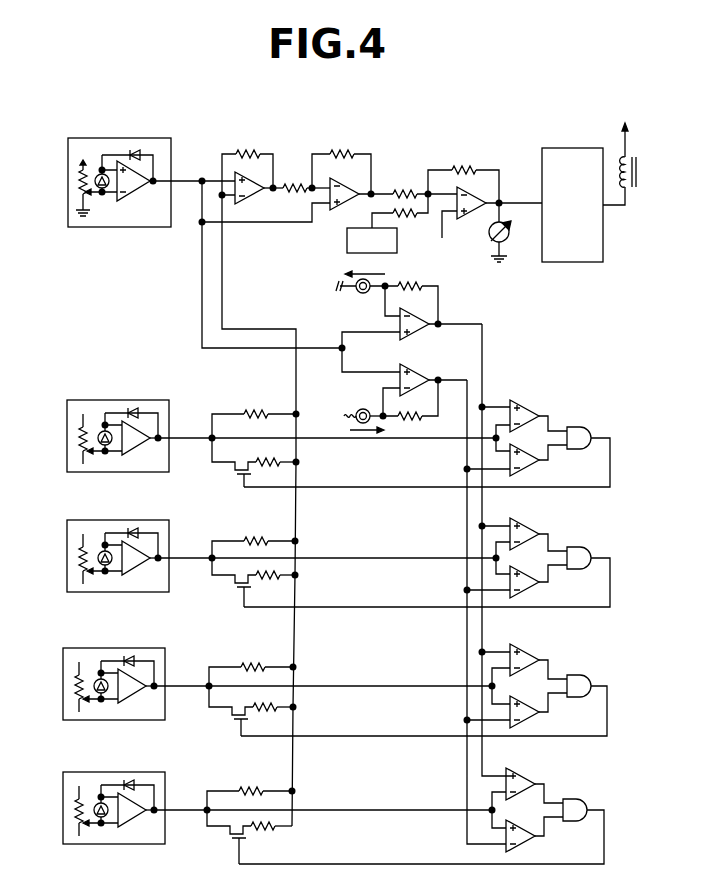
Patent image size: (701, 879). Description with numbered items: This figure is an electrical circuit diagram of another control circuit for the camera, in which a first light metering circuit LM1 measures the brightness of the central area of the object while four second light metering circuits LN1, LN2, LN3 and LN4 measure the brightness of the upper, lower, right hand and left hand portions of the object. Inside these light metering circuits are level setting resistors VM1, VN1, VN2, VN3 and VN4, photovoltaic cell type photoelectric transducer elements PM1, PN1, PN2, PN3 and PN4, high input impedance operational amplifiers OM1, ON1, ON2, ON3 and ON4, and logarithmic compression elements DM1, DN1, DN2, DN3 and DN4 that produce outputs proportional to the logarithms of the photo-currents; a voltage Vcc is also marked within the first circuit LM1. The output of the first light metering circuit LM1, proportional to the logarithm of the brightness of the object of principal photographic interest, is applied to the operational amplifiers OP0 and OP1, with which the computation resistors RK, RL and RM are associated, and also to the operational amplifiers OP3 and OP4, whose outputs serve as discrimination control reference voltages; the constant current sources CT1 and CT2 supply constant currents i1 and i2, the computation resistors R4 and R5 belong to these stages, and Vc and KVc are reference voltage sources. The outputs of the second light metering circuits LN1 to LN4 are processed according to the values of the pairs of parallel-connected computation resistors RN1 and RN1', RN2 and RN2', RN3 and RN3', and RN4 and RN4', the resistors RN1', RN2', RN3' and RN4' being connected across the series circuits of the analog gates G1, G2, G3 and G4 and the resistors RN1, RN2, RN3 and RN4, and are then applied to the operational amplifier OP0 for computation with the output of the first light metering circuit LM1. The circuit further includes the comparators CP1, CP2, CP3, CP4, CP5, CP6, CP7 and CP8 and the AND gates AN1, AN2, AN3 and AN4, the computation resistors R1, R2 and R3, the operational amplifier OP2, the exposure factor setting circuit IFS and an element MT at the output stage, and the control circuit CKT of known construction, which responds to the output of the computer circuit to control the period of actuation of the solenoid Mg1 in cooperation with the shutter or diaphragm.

The first light metering circuit LM1 is at (66, 172).
The supply voltage Vcc is at (85, 152).
The level setting resistor VM1 is at (80, 193).
The photoelectric transducer element PM1 is at (110, 190).
The logarithmic compression element DM1 is at (138, 150).
The high input impedance operational amplifier OM1 is at (132, 195).
The computation resistor RK is at (246, 152).
The operational amplifier OP0 is at (256, 192).
The computation resistor RL is at (295, 192).
The computation resistor RM is at (337, 152).
The operational amplifier OP1 is at (340, 204).
The computation resistor R1 is at (399, 189).
The computation resistor R2 is at (406, 218).
The exposure factor setting circuit IFS is at (372, 240).
The computation resistor R3 is at (456, 168).
The operational amplifier OP2 is at (476, 198).
The reference voltage source Vc is at (444, 236).
The meter MT is at (491, 243).
The control circuit CKT is at (572, 205).
The solenoid Mg1 is at (637, 172).
The constant current i1 is at (365, 266).
The constant current source CT1 is at (360, 301).
The computation resistor R4 is at (407, 283).
The operational amplifier OP3 is at (421, 331).
The operational amplifier OP4 is at (406, 372).
The computation resistor R5 is at (412, 424).
The constant current source CT2 is at (362, 408).
The reference voltage source KVc is at (331, 417).
The constant current i2 is at (373, 437).
The second light metering circuit LN1 is at (66, 424).
The level setting resistor VN1 is at (81, 450).
The photoelectric transducer element PN1 is at (112, 447).
The logarithmic compression element DN1 is at (134, 409).
The high input impedance operational amplifier ON1 is at (138, 449).
The computation resistor RN1' is at (254, 412).
The computation resistor RN1 is at (297, 470).
The analog gate G1 is at (241, 477).
The comparator CP1 is at (531, 403).
The comparator CP2 is at (533, 448).
The AND gate AN1 is at (582, 426).
The second light metering circuit LN2 is at (66, 544).
The level setting resistor VN2 is at (81, 570).
The photoelectric transducer element PN2 is at (112, 567).
The logarithmic compression element DN2 is at (134, 529).
The high input impedance operational amplifier ON2 is at (138, 569).
The computation resistor RN2' is at (253, 535).
The computation resistor RN2 is at (297, 583).
The analog gate G2 is at (241, 590).
The comparator CP3 is at (531, 521).
The comparator CP4 is at (533, 568).
The AND gate AN2 is at (582, 546).
The second light metering circuit LN3 is at (62, 672).
The level setting resistor VN3 is at (77, 698).
The photoelectric transducer element PN3 is at (108, 695).
The logarithmic compression element DN3 is at (130, 657).
The high input impedance operational amplifier ON3 is at (134, 697).
The computation resistor RN3' is at (251, 662).
The computation resistor RN3 is at (294, 715).
The analog gate G3 is at (238, 722).
The comparator CP5 is at (531, 647).
The comparator CP6 is at (533, 696).
The AND gate AN3 is at (582, 674).
The second light metering circuit LN4 is at (62, 796).
The level setting resistor VN4 is at (77, 822).
The photoelectric transducer element PN4 is at (108, 819).
The logarithmic compression element DN4 is at (130, 781).
The high input impedance operational amplifier ON4 is at (134, 821).
The computation resistor RN4' is at (249, 786).
The computation resistor RN4 is at (292, 837).
The analog gate G4 is at (236, 841).
The comparator CP7 is at (527, 771).
The comparator CP8 is at (529, 820).
The AND gate AN4 is at (578, 798).